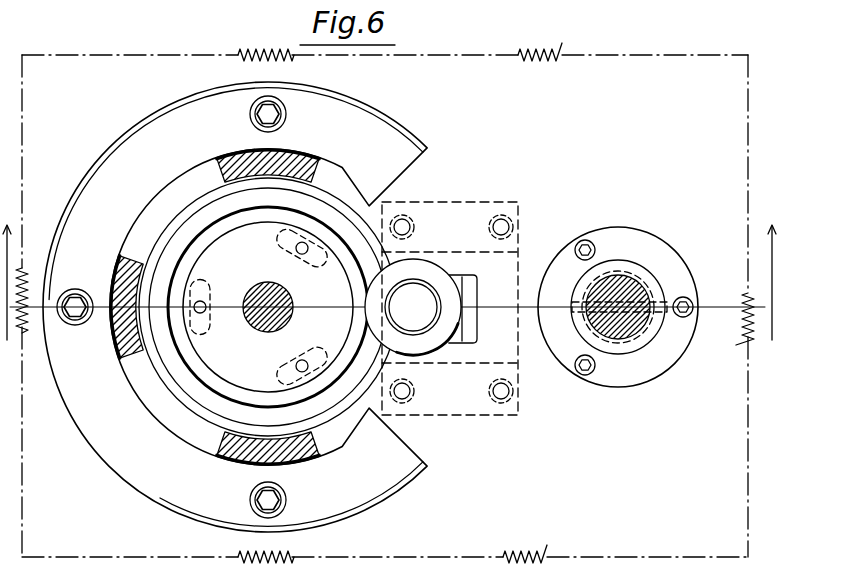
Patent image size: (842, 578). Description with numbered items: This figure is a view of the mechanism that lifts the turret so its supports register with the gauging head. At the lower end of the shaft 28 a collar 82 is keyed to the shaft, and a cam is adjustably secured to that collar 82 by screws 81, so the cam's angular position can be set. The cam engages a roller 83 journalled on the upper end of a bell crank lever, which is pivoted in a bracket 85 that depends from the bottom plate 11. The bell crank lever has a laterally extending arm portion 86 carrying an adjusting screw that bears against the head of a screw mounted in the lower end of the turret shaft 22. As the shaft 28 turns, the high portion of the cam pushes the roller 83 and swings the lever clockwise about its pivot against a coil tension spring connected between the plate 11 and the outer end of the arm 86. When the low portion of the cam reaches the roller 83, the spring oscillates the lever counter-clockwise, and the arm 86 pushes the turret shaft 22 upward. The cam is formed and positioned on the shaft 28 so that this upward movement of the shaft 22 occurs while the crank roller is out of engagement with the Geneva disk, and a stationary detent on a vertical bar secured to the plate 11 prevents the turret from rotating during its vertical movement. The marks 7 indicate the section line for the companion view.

The section line 7- 7 is at (388, 267).
The bottom plate 11 is at (618, 348).
The turret shaft 22 is at (622, 282).
The shaft 28 is at (288, 306).
The screws 81 is at (206, 304).
The collar 82 is at (268, 307).
The roller 83 is at (435, 273).
The bracket 85 is at (512, 410).
The arm portion 86 is at (468, 323).